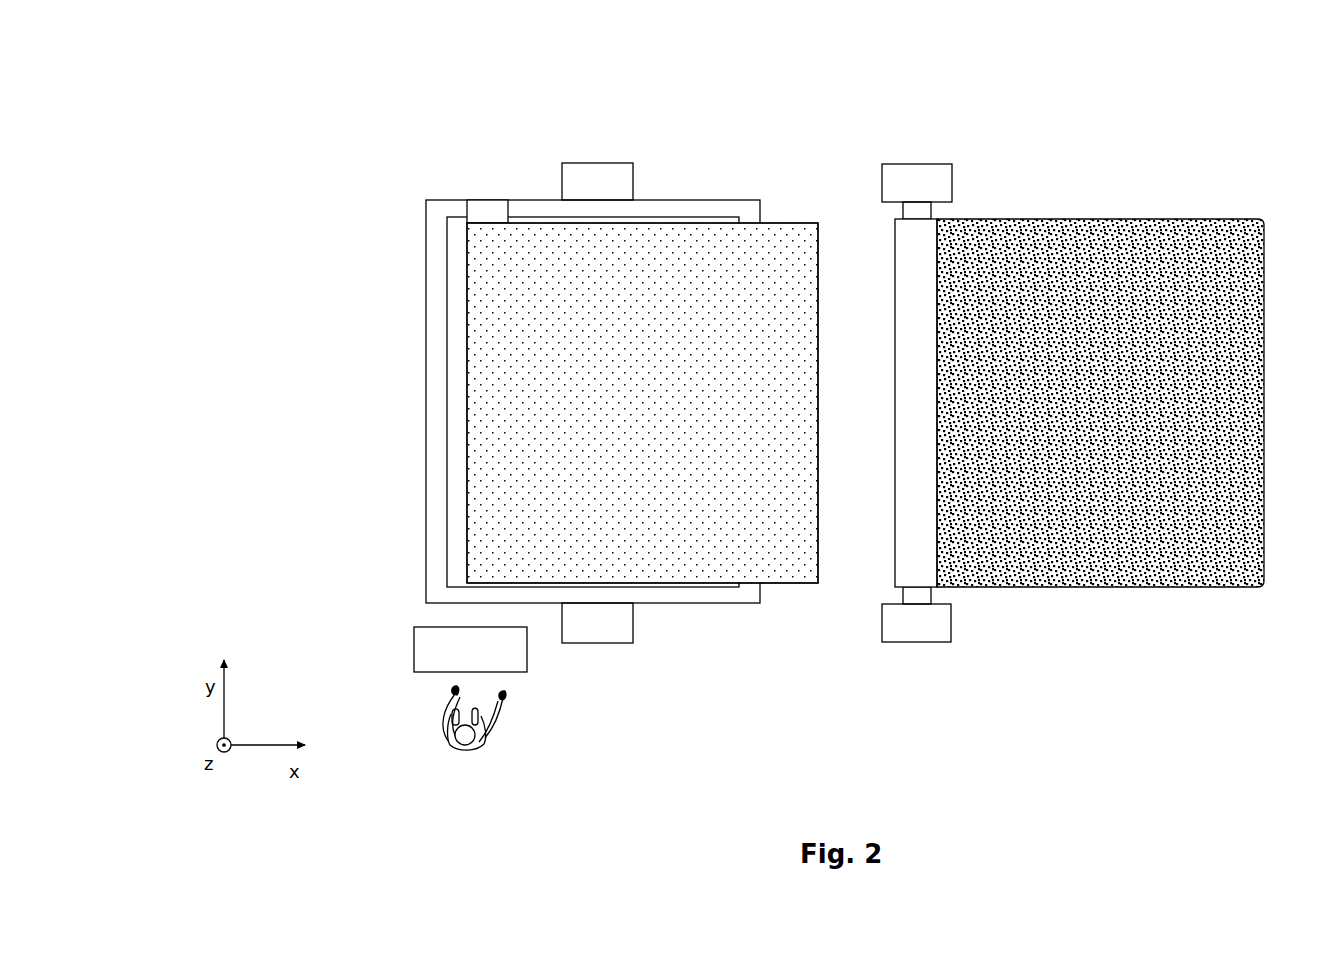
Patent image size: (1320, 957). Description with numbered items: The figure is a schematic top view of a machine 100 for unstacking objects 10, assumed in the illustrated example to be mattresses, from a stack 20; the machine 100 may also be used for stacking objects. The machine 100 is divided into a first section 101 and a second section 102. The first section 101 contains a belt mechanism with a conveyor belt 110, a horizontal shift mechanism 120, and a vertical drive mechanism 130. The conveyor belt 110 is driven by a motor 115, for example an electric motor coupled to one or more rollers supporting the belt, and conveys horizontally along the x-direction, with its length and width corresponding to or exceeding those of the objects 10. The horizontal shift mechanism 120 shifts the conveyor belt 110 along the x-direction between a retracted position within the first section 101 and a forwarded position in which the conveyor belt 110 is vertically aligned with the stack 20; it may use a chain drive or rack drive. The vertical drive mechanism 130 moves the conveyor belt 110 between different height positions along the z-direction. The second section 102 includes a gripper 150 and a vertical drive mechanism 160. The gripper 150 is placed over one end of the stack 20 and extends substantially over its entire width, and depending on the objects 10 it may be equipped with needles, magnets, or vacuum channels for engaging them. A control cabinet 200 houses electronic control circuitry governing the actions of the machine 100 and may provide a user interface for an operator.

The machine 100 is at (330, 118).
The first section 101 is at (606, 126).
The second section 102 is at (920, 126).
The conveyor belt 110 is at (783, 588).
The motor 115 is at (486, 199).
The horizontal shift mechanism 120 is at (419, 571).
The vertical drive mechanism 130 is at (605, 644).
The gripper 150 is at (907, 522).
The vertical drive mechanism 160 is at (925, 643).
The object 10 is at (1047, 578).
The stack 20 is at (1201, 603).
The control cabinet 200 is at (470, 649).